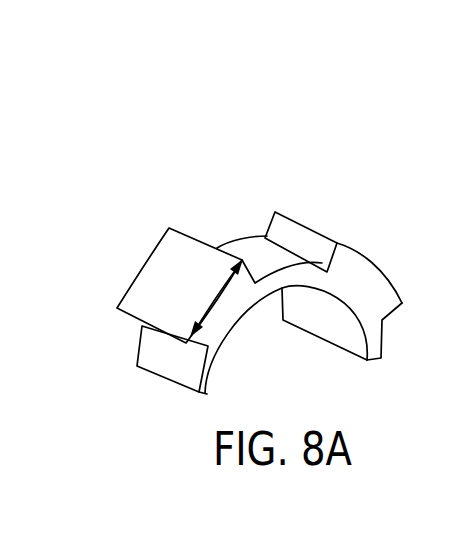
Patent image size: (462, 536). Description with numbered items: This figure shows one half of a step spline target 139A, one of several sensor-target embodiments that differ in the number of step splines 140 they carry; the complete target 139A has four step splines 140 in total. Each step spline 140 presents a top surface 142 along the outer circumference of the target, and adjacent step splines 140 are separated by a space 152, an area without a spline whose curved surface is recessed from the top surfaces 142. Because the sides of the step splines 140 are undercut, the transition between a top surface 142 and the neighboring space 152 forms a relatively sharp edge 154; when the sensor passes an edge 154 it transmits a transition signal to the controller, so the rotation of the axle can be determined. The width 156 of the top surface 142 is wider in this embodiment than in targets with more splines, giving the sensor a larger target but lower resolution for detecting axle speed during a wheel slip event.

The step spline target 139A is at (213, 140).
The step spline 140 is at (385, 302).
The top surface 142 is at (375, 260).
The space 152 is at (250, 247).
The edge 154 is at (180, 232).
The width 156 is at (213, 300).